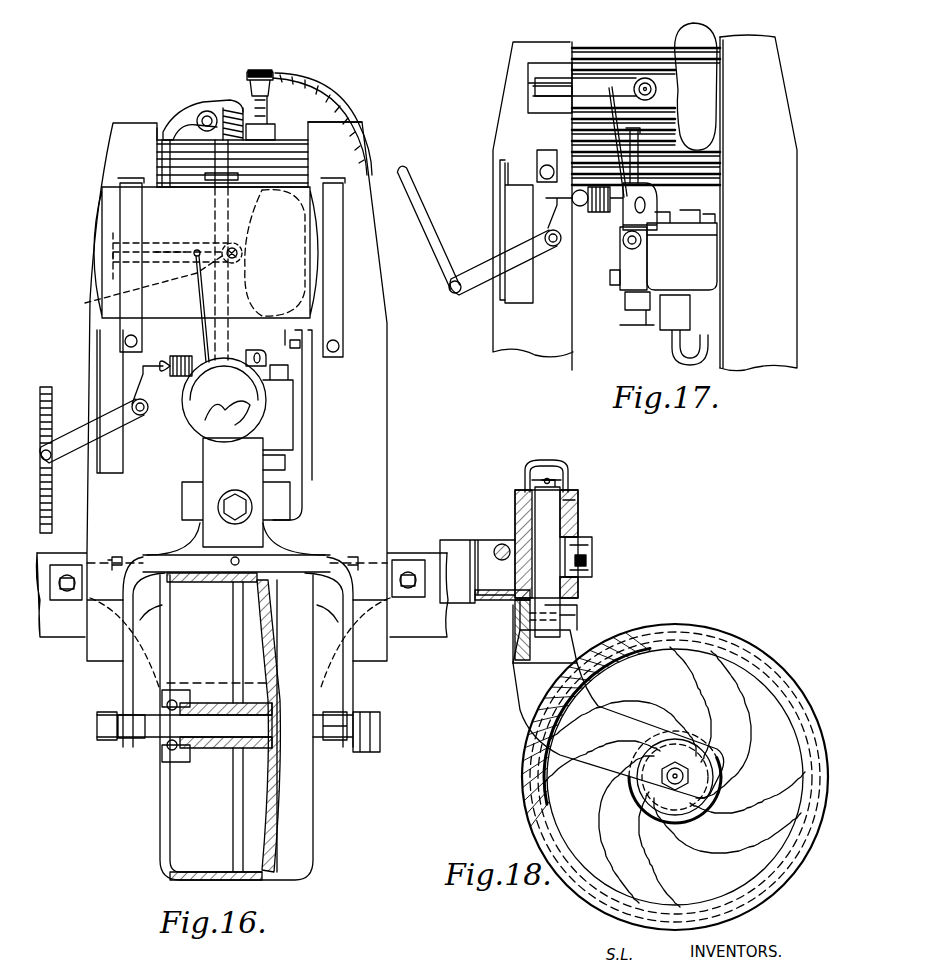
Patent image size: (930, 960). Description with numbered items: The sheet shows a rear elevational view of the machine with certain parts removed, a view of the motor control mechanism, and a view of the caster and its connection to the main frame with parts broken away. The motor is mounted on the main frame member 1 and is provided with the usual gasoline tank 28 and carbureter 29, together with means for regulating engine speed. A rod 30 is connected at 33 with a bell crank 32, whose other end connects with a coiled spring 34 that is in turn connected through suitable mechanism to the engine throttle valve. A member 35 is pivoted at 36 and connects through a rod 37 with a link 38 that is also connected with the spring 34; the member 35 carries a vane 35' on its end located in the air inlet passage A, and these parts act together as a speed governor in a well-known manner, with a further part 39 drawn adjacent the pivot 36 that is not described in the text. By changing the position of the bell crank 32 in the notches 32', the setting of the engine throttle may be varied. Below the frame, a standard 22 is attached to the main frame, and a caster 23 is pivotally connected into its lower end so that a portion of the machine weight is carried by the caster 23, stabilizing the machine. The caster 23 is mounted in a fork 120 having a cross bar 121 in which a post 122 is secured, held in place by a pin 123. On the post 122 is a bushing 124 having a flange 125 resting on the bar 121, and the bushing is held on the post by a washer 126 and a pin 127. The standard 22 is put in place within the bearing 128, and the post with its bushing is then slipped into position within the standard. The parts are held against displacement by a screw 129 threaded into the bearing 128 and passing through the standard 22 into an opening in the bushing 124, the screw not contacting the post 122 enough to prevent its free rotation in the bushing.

In FIG. 18, the main frame member 1 is at (490, 610).
In FIG. 16, the standard 22 is at (240, 428).
In FIG. 18, the standard 22 is at (570, 478).
In FIG. 16, the caster 23 is at (303, 783).
In FIG. 18, the caster 23 is at (700, 635).
In FIG. 16, the gasoline tank 28 is at (113, 210).
In FIG. 17, the carbureter 29 is at (700, 265).
In FIG. 16, the rod 30 is at (50, 440).
In FIG. 17, the rod 30 is at (436, 243).
In FIG. 16, the bell crank 32 is at (95, 434).
In FIG. 17, the bell crank 32 is at (505, 262).
In FIG. 16, the notches 32' is at (84, 401).
In FIG. 17, the notches 32' is at (506, 226).
In FIG. 17, the connection 33 is at (562, 242).
In FIG. 16, the coiled spring 34 is at (203, 355).
In FIG. 17, the coiled spring 34 is at (603, 214).
In FIG. 16, the member 35 is at (170, 241).
In FIG. 17, the member 35 is at (589, 62).
In FIG. 16, the vane 35' is at (115, 256).
In FIG. 17, the vane 35' is at (520, 94).
In FIG. 16, the pivot 36 is at (236, 245).
In FIG. 17, the pivot 36 is at (650, 78).
In FIG. 16, the rod 37 is at (85, 303).
In FIG. 17, the rod 37 is at (600, 126).
In FIG. 16, the link 38 is at (250, 344).
In FIG. 17, the link 38 is at (657, 200).
In FIG. 16, the cam 39 is at (300, 196).
In FIG. 17, the cam 39 is at (698, 52).
In FIG. 17, the air inlet passage A is at (545, 70).
In FIG. 18, the fork 120 is at (575, 648).
In FIG. 18, the cross bar 121 is at (575, 625).
In FIG. 18, the post 122 is at (562, 512).
In FIG. 18, the pin 123 is at (515, 640).
In FIG. 18, the bushing 124 is at (578, 526).
In FIG. 18, the flange 125 is at (520, 605).
In FIG. 18, the washer 126 is at (530, 470).
In FIG. 18, the pin 127 is at (549, 478).
In FIG. 18, the bearing 128 is at (515, 500).
In FIG. 18, the screw 129 is at (592, 550).